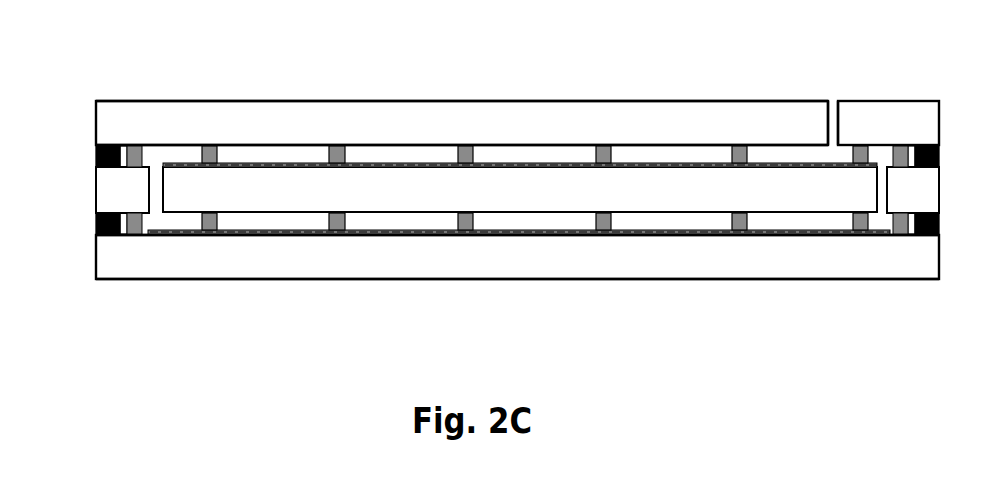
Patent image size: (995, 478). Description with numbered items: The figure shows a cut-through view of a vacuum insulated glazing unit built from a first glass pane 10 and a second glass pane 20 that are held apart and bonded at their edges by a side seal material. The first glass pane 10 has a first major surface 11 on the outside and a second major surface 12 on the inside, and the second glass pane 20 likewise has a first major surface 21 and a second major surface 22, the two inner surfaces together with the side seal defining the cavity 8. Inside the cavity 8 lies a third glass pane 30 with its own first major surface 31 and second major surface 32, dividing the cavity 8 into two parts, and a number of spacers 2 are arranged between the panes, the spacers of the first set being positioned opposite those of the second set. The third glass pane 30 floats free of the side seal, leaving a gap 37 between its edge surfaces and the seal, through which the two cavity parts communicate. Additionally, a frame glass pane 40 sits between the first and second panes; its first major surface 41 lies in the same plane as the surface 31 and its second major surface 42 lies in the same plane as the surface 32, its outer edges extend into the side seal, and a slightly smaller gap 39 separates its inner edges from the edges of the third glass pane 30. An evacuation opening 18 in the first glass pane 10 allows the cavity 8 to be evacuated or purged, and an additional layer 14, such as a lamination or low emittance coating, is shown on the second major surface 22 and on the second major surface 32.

The spacers 2 is at (206, 148).
The cavity 8 is at (261, 155).
The first glass pane 10 is at (433, 114).
The first major surface 11 is at (457, 101).
The second major surface 12 is at (480, 143).
The additional layer 14 is at (570, 162).
The evacuation opening 18 is at (834, 127).
The second glass pane 20 is at (430, 259).
The first major surface 21 is at (454, 272).
The second major surface 22 is at (480, 233).
The third glass pane 30 is at (682, 187).
The first major surface 31 is at (688, 163).
The second major surface 32 is at (693, 210).
The gap 37 is at (883, 192).
The gap 39 is at (158, 190).
The frame glass pane 40 is at (120, 197).
The first major surface 41 is at (105, 145).
The second major surface 42 is at (122, 210).